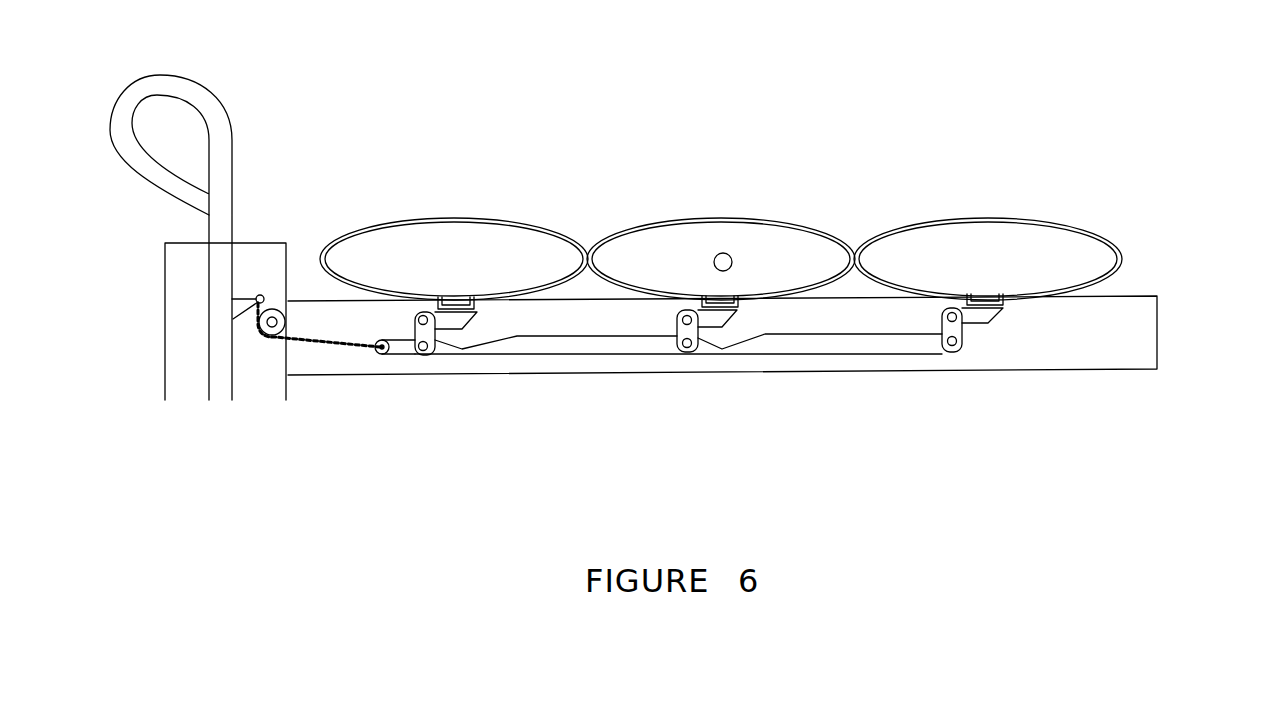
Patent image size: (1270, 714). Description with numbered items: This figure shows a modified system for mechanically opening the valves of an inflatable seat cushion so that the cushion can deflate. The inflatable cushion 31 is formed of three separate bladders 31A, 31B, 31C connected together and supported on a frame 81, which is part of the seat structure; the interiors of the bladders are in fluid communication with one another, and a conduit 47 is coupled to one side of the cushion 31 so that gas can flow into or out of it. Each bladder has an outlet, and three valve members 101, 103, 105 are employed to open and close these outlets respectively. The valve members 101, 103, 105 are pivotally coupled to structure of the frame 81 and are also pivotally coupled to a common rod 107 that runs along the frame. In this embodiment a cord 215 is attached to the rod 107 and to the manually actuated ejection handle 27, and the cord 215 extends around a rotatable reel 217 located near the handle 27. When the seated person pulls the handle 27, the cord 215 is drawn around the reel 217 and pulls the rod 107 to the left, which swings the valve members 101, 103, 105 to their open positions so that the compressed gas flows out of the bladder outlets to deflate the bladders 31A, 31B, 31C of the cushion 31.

The ejection handle 27 is at (210, 102).
The rotatable reel 217 is at (262, 335).
The cord 215 is at (327, 337).
The frame 81 is at (1153, 332).
The inflatable cushion 31 is at (747, 211).
The bladder 31A is at (455, 218).
The bladder 31B is at (720, 218).
The bladder 31C is at (1043, 218).
The conduit 47 is at (717, 255).
The valve member 101 is at (452, 320).
The valve member 103 is at (713, 318).
The valve member 105 is at (973, 317).
The rod 107 is at (857, 343).